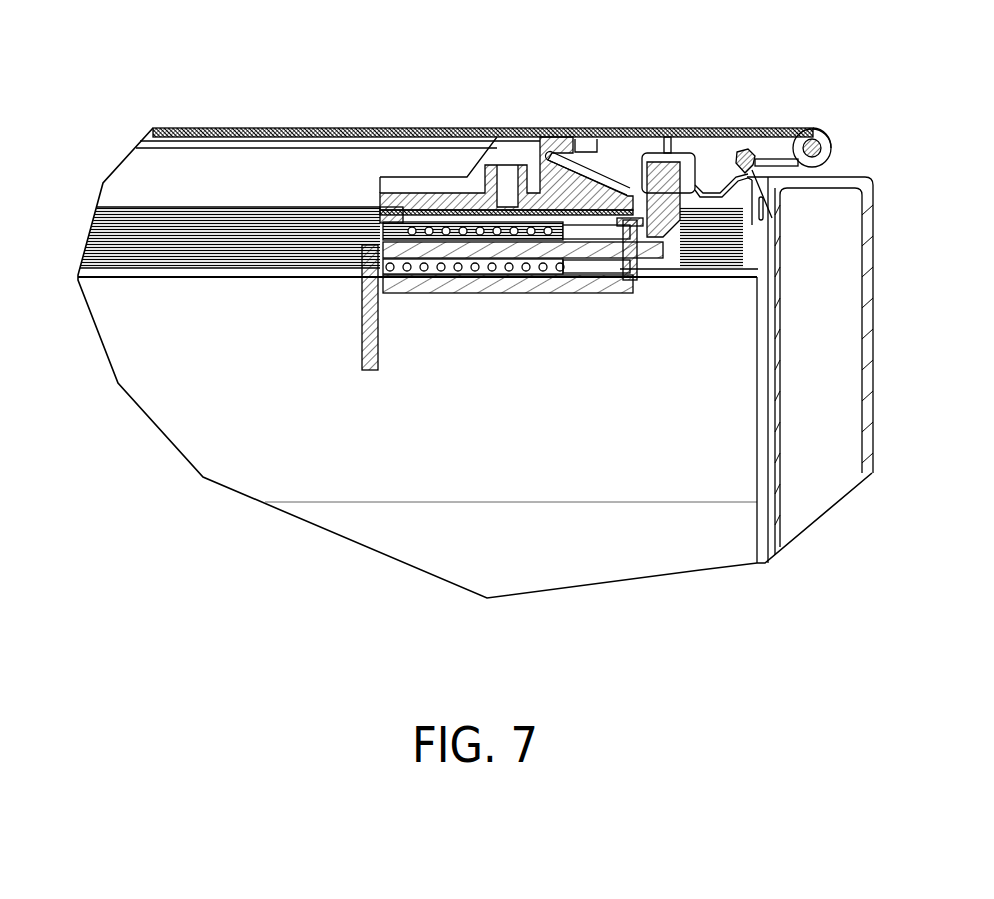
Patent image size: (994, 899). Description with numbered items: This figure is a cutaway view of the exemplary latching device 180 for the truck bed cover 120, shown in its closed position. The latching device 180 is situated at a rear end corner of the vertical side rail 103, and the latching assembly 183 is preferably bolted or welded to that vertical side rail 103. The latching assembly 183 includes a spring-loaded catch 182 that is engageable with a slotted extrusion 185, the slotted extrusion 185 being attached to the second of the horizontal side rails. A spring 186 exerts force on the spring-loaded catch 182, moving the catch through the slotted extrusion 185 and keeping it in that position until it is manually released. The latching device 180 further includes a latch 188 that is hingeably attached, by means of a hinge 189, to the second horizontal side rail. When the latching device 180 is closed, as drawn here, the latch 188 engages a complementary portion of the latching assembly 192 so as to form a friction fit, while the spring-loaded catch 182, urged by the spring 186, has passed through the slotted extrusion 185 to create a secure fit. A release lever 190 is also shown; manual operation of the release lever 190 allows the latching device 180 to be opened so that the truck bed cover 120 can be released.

The latching device 180 is at (245, 75).
The truck bed cover 120 is at (418, 130).
The complementary portion of the latching assembly 192 is at (563, 188).
The latch 188 is at (590, 163).
The slotted extrusion 185 is at (678, 171).
The vertical side rail 103 is at (724, 151).
The hinge 189 is at (817, 143).
The spring-loaded catch 182 is at (633, 247).
The latching assembly 183 is at (452, 285).
The spring 186 is at (521, 268).
The release lever 190 is at (360, 318).